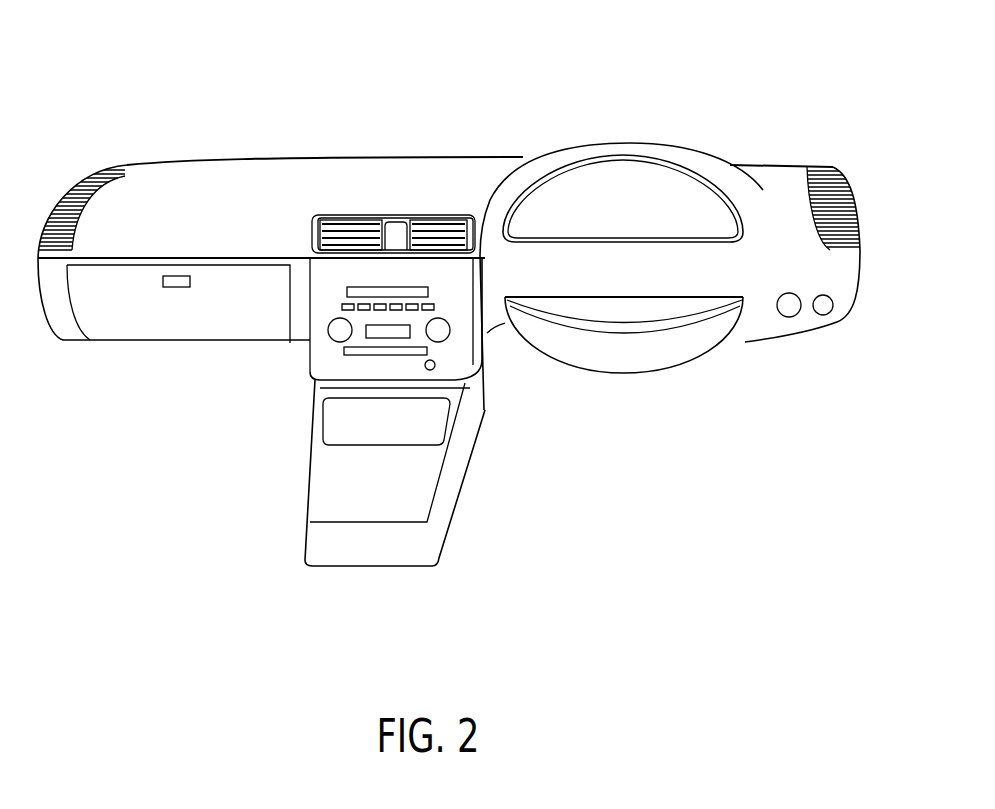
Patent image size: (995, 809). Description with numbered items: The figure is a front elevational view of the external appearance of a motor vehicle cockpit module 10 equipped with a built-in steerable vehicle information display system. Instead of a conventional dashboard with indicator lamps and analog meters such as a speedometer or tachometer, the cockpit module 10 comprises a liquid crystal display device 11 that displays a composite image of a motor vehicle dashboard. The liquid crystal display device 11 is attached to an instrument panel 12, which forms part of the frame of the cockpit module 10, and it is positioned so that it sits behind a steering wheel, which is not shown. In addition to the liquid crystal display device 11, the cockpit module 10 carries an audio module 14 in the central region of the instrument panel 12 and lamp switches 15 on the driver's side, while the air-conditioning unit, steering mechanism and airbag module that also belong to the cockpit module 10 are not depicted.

The cockpit module 10 is at (747, 100).
The liquid crystal display device 11 is at (613, 190).
The instrument panel 12 is at (230, 183).
The audio module 14 is at (325, 300).
The lamp switches 15 is at (793, 313).